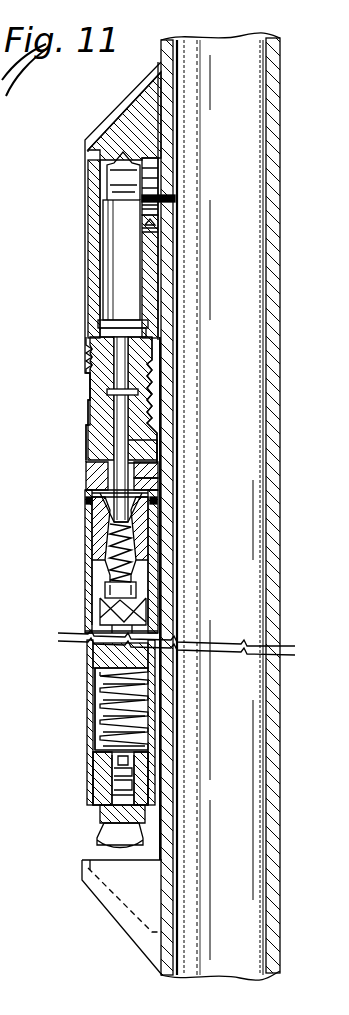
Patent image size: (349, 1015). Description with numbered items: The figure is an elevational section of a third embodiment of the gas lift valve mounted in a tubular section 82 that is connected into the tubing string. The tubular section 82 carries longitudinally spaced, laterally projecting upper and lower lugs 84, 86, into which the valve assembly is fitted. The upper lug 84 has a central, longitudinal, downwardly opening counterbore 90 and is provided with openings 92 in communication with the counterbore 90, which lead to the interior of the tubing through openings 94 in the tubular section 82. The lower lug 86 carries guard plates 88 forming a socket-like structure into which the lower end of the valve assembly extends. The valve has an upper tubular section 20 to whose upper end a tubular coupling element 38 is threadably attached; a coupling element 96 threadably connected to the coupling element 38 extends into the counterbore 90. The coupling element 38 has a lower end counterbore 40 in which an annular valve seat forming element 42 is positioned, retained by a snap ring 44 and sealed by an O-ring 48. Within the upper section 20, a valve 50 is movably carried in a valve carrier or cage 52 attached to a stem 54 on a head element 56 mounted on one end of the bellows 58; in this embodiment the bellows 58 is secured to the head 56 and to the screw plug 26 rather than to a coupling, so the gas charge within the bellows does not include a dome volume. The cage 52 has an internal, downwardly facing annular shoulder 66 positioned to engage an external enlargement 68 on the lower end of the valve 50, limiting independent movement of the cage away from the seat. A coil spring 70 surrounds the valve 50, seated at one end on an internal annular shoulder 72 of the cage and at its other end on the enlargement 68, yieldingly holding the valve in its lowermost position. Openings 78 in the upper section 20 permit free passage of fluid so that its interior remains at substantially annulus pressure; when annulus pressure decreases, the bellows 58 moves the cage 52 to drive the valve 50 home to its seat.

The upper tubular section 20 is at (88, 569).
The screw plug 26 is at (140, 785).
The tubular coupling element 38 is at (95, 442).
The lower end counterbore 40 is at (108, 471).
The annular valve seat forming element 42 is at (150, 456).
The snap ring 44 is at (155, 485).
The O-ring 48 is at (150, 468).
The valve 50 is at (94, 500).
The valve carrier or cage 52 is at (100, 526).
The stem 54 is at (140, 629).
The head element 56 is at (150, 659).
The bellows 58 is at (148, 691).
The annular shoulder 66 is at (110, 558).
The external enlargement 68 is at (143, 586).
The coil spring 70 is at (148, 561).
The internal annular shoulder 72 is at (148, 512).
The openings 78 is at (110, 502).
The tubular section 82 is at (275, 259).
The upper lug 84 is at (100, 124).
The lower lug 86 is at (100, 904).
The guard plates 88 is at (125, 932).
The counterbore 90 is at (110, 262).
The openings 92 is at (145, 182).
The openings 94 is at (170, 160).
The coupling element 96 is at (160, 405).